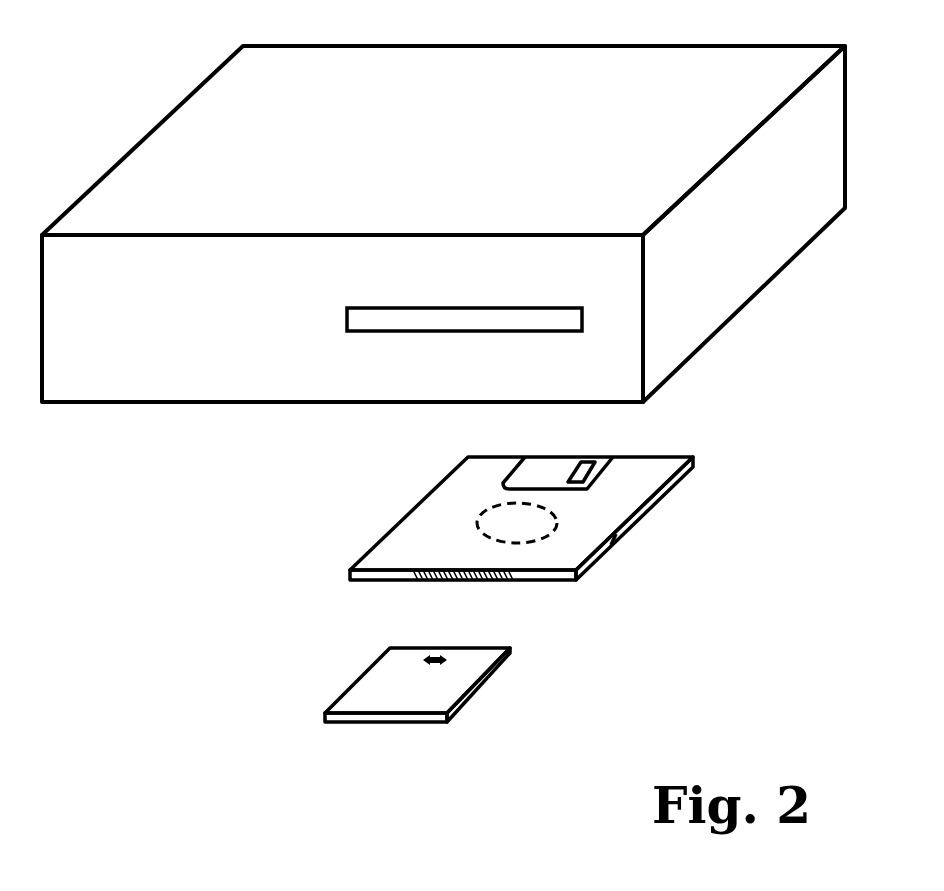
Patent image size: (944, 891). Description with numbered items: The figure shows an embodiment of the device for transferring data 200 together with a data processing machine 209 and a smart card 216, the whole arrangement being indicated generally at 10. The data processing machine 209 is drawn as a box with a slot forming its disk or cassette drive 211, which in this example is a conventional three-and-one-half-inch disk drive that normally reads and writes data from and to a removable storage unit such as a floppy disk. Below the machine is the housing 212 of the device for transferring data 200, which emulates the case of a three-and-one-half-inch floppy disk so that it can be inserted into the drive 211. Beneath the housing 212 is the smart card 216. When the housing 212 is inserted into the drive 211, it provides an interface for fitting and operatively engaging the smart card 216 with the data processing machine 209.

The disk drive device 10 is at (842, 423).
The data processing machine 209 is at (780, 257).
The disk or cassette drive 211 is at (562, 323).
The device for transferring data 200 is at (593, 567).
The housing 212 is at (637, 503).
The smart card 216 is at (465, 688).